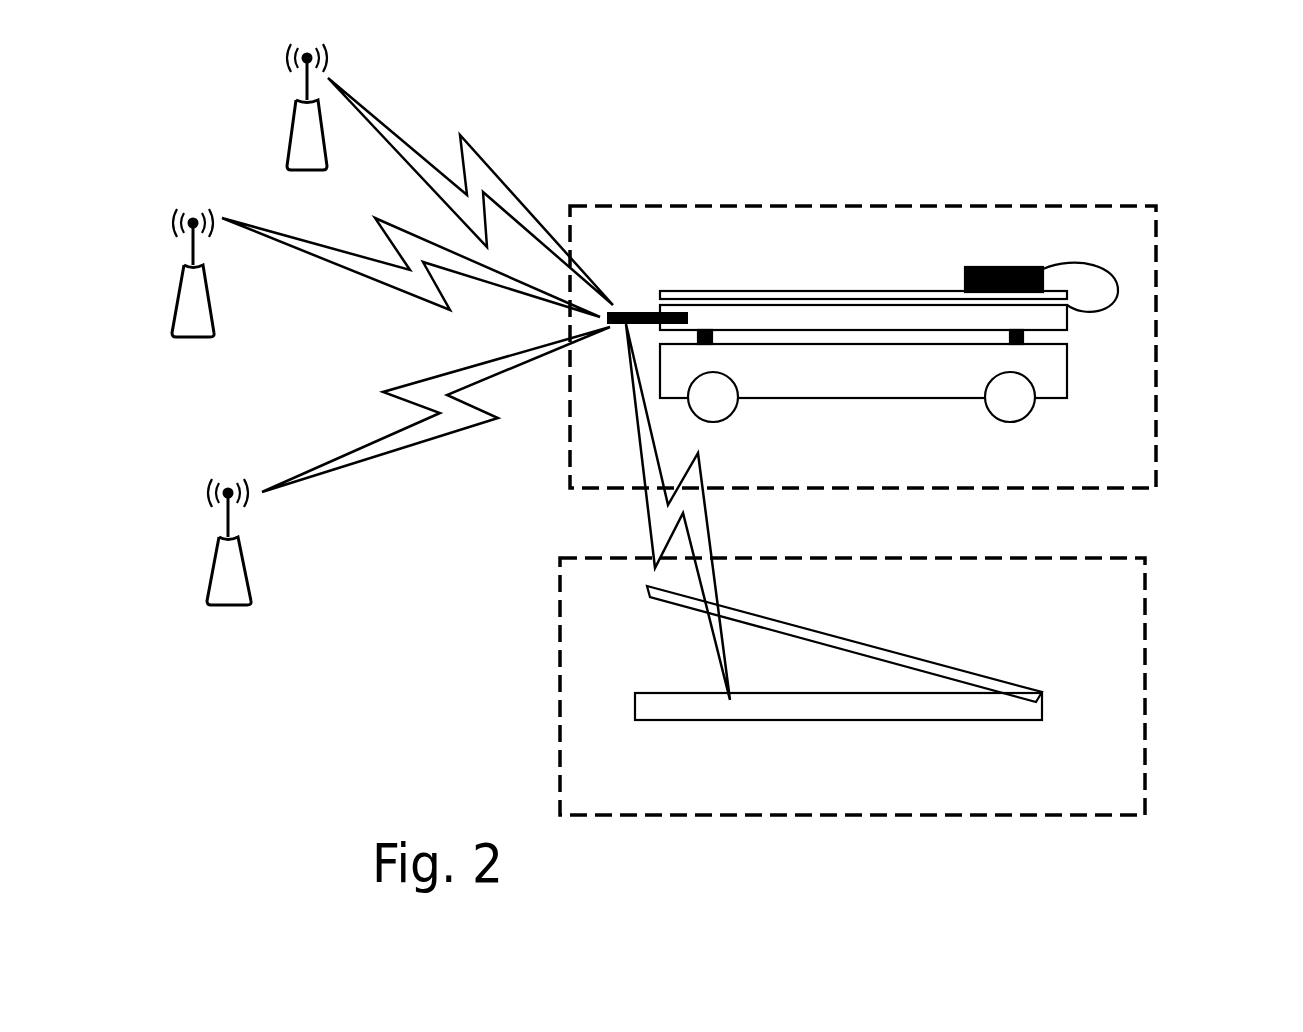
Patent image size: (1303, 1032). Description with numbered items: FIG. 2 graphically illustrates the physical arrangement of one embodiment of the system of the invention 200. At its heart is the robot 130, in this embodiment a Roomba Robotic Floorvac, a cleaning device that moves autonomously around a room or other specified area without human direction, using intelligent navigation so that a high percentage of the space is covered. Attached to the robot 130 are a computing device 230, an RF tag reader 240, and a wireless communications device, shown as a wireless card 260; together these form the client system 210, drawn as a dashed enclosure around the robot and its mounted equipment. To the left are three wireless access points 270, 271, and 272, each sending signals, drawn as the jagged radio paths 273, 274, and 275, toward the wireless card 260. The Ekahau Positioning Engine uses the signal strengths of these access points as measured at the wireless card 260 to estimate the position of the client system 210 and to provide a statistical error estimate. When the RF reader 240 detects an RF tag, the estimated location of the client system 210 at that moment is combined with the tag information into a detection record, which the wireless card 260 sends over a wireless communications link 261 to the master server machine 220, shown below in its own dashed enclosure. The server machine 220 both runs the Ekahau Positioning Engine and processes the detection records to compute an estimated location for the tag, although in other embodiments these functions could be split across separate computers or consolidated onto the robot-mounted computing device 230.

The system of the invention 200 is at (442, 685).
The client system 210 is at (921, 300).
The server machine 220 is at (852, 688).
The computing device 230 is at (830, 291).
The RF tag reader 240 is at (1012, 248).
The wireless communications device 260 is at (633, 303).
The wireless communications link 261 is at (695, 512).
The robot 130 is at (863, 376).
The wireless access point 270 is at (201, 542).
The wireless access point 271 is at (217, 273).
The wireless access point 272 is at (267, 107).
The wireless signal from access point 270 273 is at (436, 413).
The wireless signal from access point 271 274 is at (411, 275).
The wireless signal from access point 272 275 is at (470, 191).